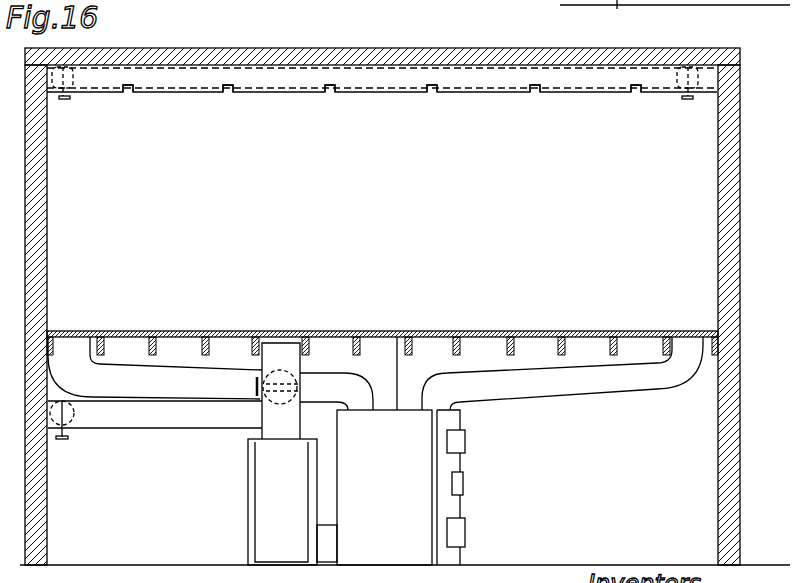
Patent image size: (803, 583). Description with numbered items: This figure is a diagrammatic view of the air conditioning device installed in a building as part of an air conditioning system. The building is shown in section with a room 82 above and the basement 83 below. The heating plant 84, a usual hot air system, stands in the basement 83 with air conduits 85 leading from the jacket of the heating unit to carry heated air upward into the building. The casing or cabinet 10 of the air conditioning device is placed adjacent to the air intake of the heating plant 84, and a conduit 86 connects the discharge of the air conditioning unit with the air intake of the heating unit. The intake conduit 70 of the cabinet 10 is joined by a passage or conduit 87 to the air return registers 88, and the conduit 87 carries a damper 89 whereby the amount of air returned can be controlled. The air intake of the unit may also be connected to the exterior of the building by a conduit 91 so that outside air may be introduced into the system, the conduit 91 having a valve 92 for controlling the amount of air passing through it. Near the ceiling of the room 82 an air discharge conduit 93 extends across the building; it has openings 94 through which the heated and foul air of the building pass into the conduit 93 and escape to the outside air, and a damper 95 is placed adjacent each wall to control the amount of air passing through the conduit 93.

The casing or cabinet 10 is at (265, 488).
The intake conduit 70 is at (278, 432).
The room 82 is at (707, 180).
The basement 83 is at (703, 430).
The heating plant 84 is at (413, 460).
The air conduits 85 is at (564, 405).
The conduit 86 is at (332, 523).
The passage or conduit 87 is at (294, 364).
The air return registers 88 is at (272, 342).
The damper 89 is at (254, 388).
The conduit 91 is at (145, 418).
The valve 92 is at (66, 438).
The air discharge conduit 93 is at (382, 72).
The openings 94 is at (514, 118).
The damper 95 is at (694, 118).